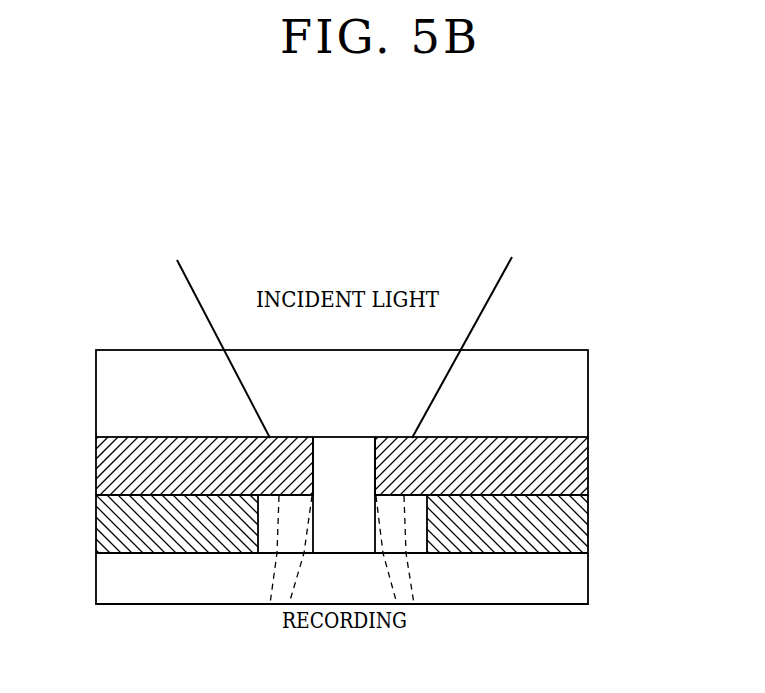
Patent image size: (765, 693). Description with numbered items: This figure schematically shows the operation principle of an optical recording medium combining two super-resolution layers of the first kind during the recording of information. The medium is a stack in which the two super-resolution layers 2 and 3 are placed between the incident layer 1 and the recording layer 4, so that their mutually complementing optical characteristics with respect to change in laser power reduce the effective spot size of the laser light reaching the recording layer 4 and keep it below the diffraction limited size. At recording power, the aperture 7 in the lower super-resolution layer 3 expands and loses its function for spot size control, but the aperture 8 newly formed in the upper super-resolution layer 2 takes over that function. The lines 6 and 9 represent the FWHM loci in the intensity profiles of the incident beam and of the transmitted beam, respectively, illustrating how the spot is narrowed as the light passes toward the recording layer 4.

The incident layer 1 is at (582, 387).
The super-resolution layer 2 is at (582, 468).
The super-resolution layer 3 is at (582, 525).
The recording layer 4 is at (582, 578).
The line 6 is at (275, 582).
The aperture 7 is at (370, 525).
The aperture 8 is at (322, 468).
The line 9 is at (302, 557).